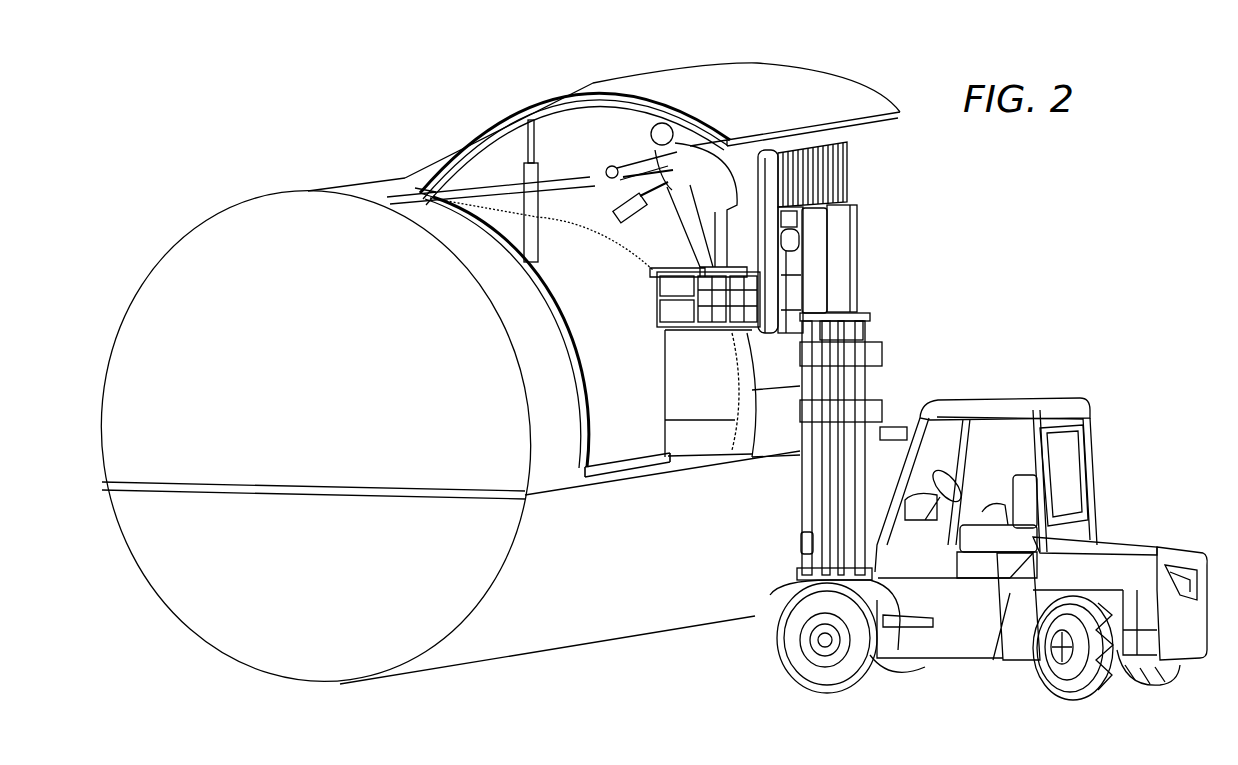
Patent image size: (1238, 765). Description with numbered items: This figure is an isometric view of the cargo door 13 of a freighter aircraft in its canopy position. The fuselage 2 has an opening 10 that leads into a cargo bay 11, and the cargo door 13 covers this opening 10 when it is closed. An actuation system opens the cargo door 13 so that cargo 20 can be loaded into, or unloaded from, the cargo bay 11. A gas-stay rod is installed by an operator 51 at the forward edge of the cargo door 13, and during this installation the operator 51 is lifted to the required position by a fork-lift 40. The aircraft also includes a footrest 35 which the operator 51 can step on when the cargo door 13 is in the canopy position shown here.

The fuselage 2 is at (558, 607).
The opening 10 is at (713, 452).
The cargo bay 11 is at (691, 372).
The cargo door 13 is at (833, 108).
The cargo 20 is at (607, 393).
The footrest 35 is at (628, 215).
The fork-lift 40 is at (918, 261).
The operator 51 is at (660, 128).